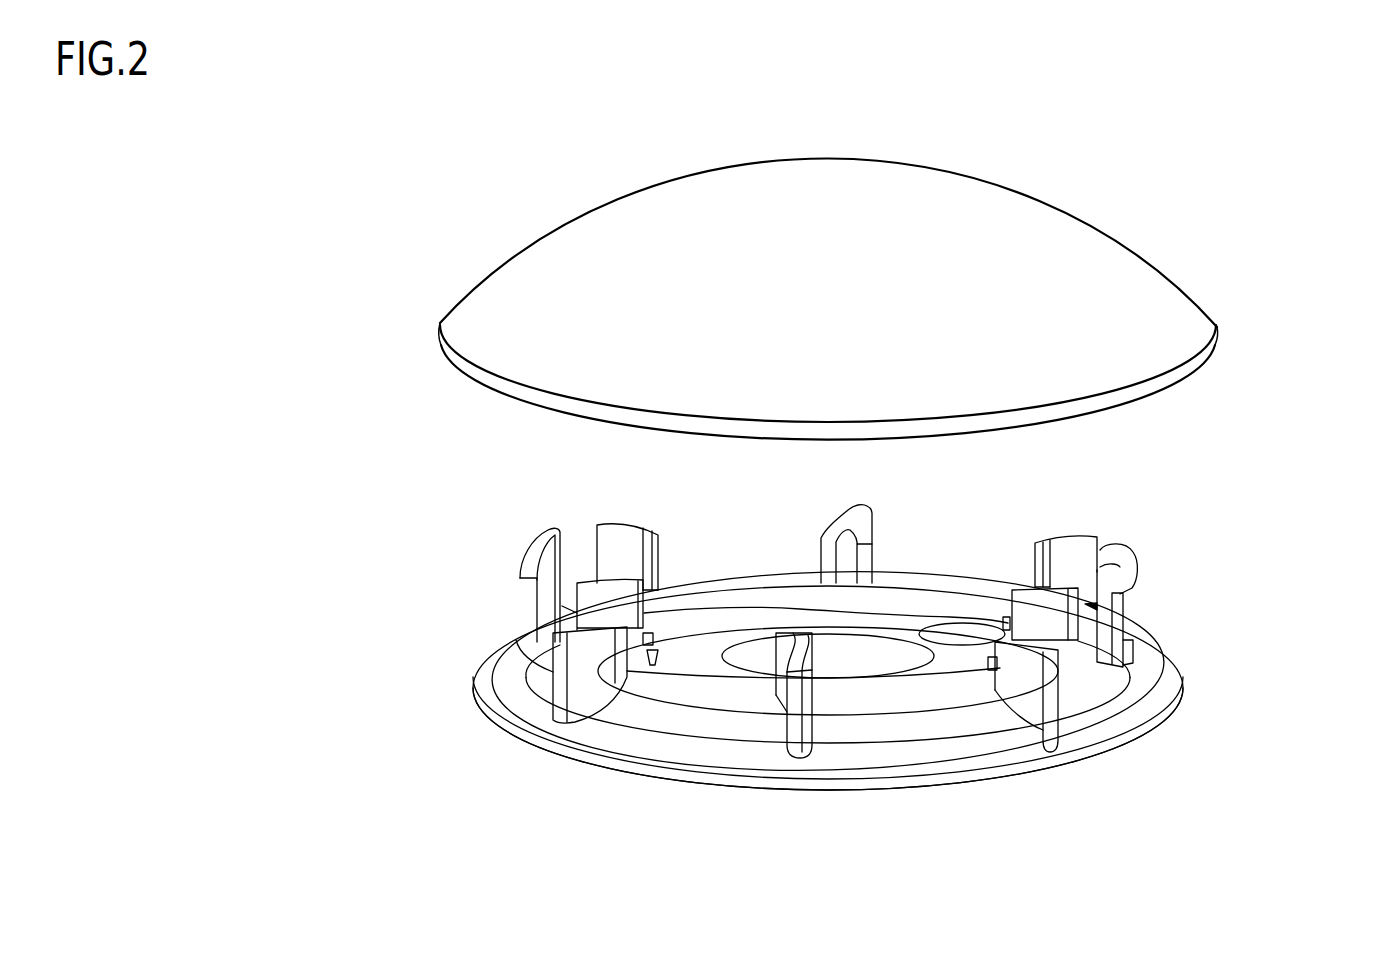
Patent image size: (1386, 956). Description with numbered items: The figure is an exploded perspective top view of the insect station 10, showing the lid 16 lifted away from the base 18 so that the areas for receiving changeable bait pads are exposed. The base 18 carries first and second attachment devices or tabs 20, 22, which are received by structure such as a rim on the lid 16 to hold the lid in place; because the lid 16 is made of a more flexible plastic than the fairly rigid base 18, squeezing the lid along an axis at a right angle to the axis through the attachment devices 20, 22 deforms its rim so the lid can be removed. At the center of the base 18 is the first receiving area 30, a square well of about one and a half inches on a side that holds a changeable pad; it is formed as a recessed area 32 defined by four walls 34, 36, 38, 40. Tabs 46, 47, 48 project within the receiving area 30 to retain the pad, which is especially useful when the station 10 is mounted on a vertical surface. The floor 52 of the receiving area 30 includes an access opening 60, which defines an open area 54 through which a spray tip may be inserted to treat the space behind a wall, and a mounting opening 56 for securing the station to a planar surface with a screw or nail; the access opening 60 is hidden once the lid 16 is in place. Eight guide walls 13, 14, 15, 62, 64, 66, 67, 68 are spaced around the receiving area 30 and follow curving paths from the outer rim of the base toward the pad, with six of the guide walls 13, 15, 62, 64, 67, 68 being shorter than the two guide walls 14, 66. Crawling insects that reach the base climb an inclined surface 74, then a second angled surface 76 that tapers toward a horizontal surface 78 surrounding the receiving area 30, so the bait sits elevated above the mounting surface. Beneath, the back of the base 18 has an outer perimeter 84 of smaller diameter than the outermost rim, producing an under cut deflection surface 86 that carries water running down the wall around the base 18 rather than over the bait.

The station 10 is at (1278, 378).
The guide wall 13 is at (559, 718).
The guide wall 14 is at (793, 754).
The guide wall 15 is at (1054, 723).
The lid 16 is at (1140, 249).
The base 18 is at (1166, 689).
The attachment device 20 is at (1130, 561).
The attachment device 22 is at (535, 549).
The first receiving area 30 is at (948, 596).
The recessed area 32 is at (912, 598).
The wall 34 is at (700, 596).
The wall 36 is at (634, 660).
The wall 38 is at (700, 673).
The wall 40 is at (993, 687).
The tab 46 is at (653, 631).
The tab 47 is at (1004, 620).
The tab 48 is at (988, 661).
The floor 52 is at (768, 620).
The open area 54 is at (865, 665).
The mounting opening 56 is at (930, 628).
The access opening 60 is at (746, 648).
The guide wall 62 is at (585, 578).
The guide wall 64 is at (603, 524).
The guide wall 66 is at (862, 508).
The guide wall 67 is at (1093, 537).
The guide wall 68 is at (1078, 615).
The inclined surface 74 is at (952, 758).
The second angled surface 76 is at (968, 725).
The horizontal surface 78 is at (977, 698).
The outer perimeter 84 is at (873, 790).
The under cut deflection surface 86 is at (913, 785).